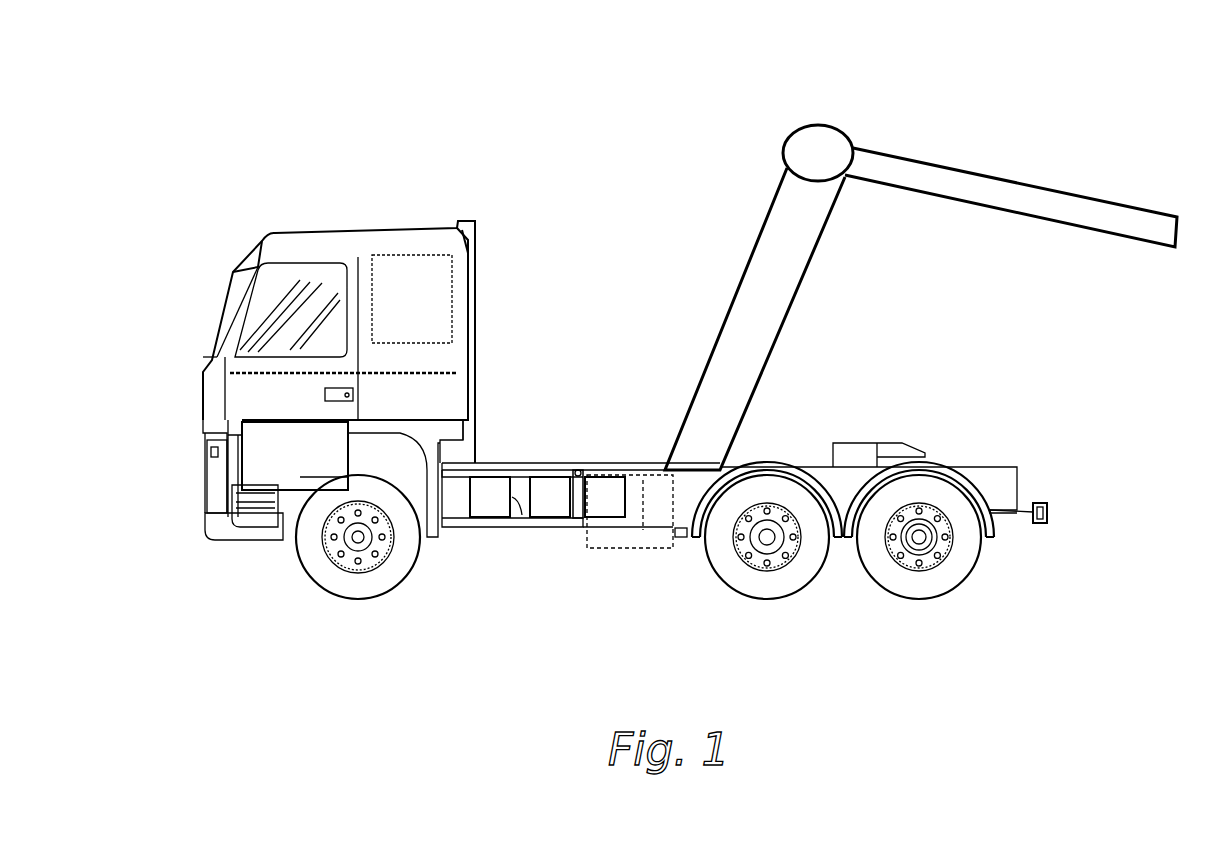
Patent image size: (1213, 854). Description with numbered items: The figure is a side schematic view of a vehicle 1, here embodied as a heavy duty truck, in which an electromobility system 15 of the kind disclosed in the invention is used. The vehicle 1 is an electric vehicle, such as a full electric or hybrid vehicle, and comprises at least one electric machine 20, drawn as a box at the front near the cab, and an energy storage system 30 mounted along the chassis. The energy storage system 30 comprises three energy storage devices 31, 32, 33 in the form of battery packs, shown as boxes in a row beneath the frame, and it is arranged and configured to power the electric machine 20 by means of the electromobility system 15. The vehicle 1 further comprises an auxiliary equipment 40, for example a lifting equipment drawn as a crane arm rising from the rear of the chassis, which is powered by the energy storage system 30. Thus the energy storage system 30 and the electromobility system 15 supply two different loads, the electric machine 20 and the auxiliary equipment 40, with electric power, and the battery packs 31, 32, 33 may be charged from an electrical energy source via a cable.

The vehicle 1 is at (663, 378).
The electromobility system 15 is at (737, 467).
The electric machine 20 is at (244, 467).
The energy storage system 30 is at (618, 435).
The energy storage device 31 is at (495, 520).
The energy storage device 32 is at (553, 520).
The energy storage device 33 is at (600, 520).
The auxiliary equipment 40 is at (773, 193).